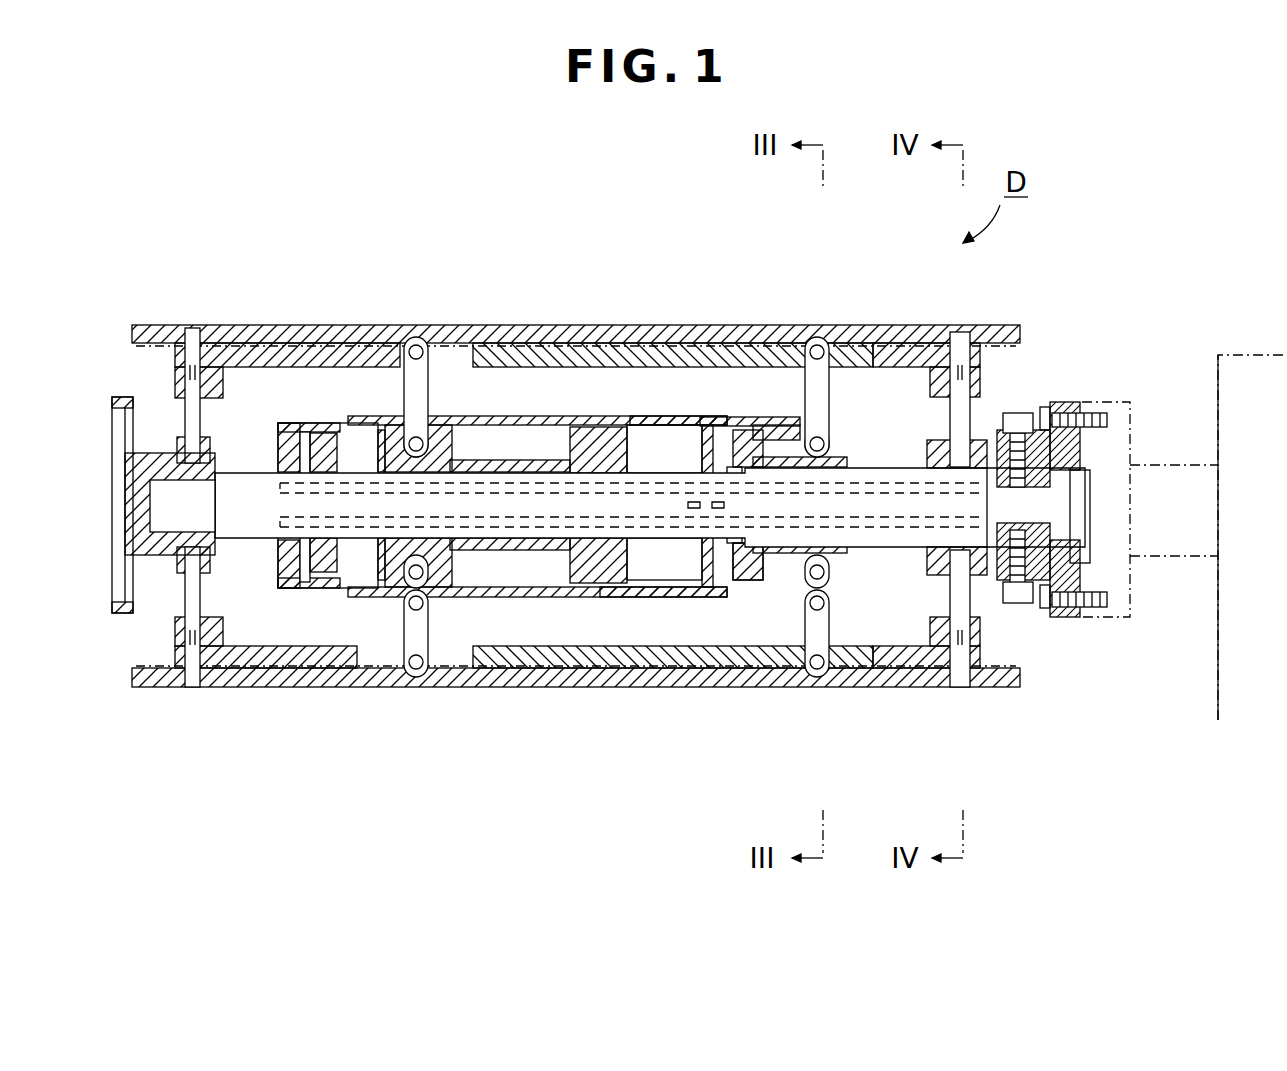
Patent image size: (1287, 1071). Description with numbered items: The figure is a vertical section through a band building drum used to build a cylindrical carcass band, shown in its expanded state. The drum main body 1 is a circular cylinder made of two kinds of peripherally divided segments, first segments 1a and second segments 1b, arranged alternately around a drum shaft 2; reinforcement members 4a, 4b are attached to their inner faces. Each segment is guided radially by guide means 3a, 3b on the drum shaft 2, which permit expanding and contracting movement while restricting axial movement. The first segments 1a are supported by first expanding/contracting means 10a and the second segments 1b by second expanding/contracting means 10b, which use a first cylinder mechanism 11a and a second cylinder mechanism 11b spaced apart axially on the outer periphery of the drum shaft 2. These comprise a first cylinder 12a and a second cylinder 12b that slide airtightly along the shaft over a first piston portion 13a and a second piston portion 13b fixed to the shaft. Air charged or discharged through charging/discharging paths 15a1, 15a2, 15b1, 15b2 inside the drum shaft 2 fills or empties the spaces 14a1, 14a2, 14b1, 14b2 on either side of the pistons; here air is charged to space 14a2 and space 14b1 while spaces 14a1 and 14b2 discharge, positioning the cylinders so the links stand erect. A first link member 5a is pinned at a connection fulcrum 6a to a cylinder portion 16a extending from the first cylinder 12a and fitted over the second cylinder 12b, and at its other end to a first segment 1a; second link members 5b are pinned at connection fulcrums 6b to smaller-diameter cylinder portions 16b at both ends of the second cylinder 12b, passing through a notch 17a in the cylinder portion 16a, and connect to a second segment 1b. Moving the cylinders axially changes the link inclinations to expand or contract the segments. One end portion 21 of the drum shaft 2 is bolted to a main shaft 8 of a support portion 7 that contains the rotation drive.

The drum main body 1 is at (541, 501).
The first segment 1a is at (330, 692).
The second segment 1b is at (308, 323).
The drum shaft 2 is at (645, 477).
The guide means 3a is at (190, 602).
The guide means 3b is at (192, 420).
The reinforcement member 4a is at (549, 665).
The reinforcement member 4b is at (527, 358).
The first link member 5a is at (420, 632).
The second link member 5b is at (415, 395).
The connection fulcrum 6a is at (432, 606).
The connection fulcrum 6b is at (452, 410).
The support portion 7 is at (1266, 348).
The main shaft 8 is at (1183, 477).
The first expanding/contracting means 10a is at (312, 600).
The second expanding/contracting means 10b is at (727, 406).
The first cylinder mechanism 11a is at (353, 455).
The second cylinder mechanism 11b is at (678, 597).
The first cylinder 12a is at (335, 592).
The second cylinder 12b is at (610, 425).
The first piston portion 13a is at (285, 562).
The second piston portion 13b is at (687, 421).
The inner space of cylinder 14a1 is at (272, 552).
The inner space of cylinder 14a2 is at (320, 413).
The inner space of cylinder 14b1 is at (648, 562).
The inner space of cylinder 14b2 is at (733, 590).
The air charging/discharging path 15a1 is at (900, 485).
The air charging/discharging path 15a2 is at (900, 528).
The air charging/discharging path 15b1 is at (1043, 612).
The air charging/discharging path 15b2 is at (1079, 599).
The cylinder portion 16a is at (478, 597).
The cylinder portion 16b is at (550, 425).
The notch 17a is at (466, 420).
The end portion 21 is at (1067, 572).